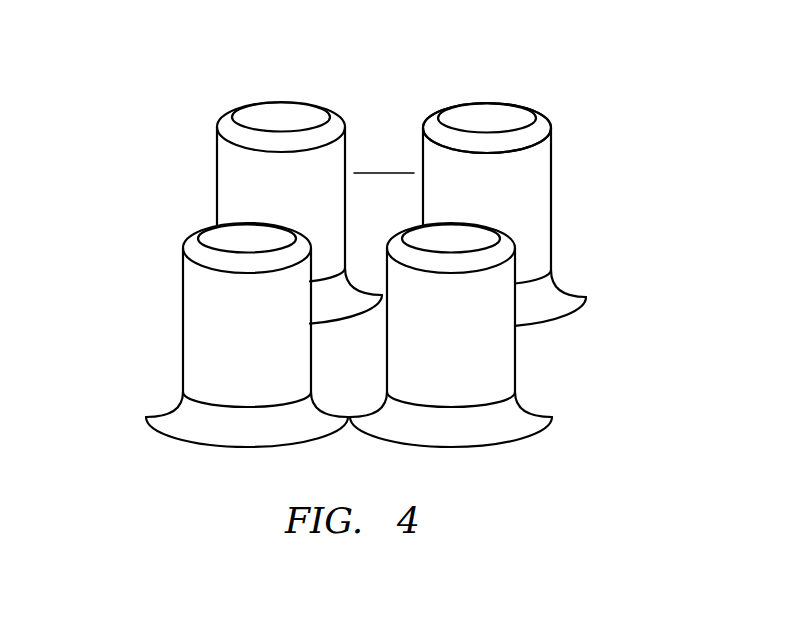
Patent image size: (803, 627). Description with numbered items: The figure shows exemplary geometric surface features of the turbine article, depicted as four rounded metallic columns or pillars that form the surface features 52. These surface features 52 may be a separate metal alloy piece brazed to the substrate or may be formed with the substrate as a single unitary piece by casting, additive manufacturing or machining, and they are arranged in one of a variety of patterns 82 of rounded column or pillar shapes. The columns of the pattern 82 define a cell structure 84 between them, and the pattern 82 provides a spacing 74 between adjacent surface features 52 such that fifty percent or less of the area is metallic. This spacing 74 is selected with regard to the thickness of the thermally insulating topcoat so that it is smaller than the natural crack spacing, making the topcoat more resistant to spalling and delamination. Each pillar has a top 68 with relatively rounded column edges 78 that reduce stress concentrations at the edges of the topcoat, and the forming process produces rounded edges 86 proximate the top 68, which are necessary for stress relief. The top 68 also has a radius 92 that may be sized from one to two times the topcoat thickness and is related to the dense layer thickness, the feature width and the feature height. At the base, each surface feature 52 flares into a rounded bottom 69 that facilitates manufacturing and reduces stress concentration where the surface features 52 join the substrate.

The surface feature 52 is at (368, 274).
The top 68 is at (478, 110).
The rounded bottom 69 is at (150, 404).
The spacing 74 is at (384, 159).
The rounded column edge 78 is at (225, 120).
The pattern 82 is at (348, 229).
The cell structure 84 is at (381, 96).
The rounded edge 86 is at (551, 118).
The radius 92 is at (452, 238).